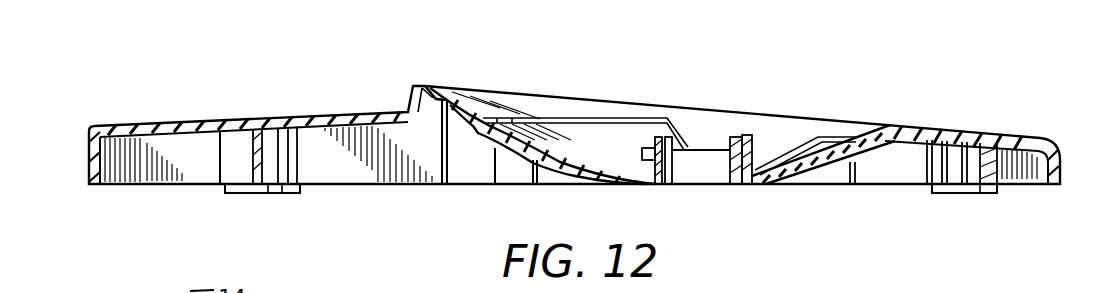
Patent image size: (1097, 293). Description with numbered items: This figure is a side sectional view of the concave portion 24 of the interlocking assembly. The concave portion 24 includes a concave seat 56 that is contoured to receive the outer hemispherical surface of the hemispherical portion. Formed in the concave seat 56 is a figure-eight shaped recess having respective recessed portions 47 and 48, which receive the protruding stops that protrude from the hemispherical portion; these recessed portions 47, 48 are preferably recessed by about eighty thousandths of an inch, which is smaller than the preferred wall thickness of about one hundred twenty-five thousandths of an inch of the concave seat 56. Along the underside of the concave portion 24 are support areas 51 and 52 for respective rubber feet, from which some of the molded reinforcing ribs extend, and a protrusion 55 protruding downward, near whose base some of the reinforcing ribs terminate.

The concave portion 24 is at (950, 91).
The recessed portion 47 is at (591, 143).
The recessed portion 48 is at (831, 147).
The support area 51 is at (237, 168).
The support area 52 is at (990, 168).
The protrusion 55 is at (703, 141).
The concave seat 56 is at (808, 158).